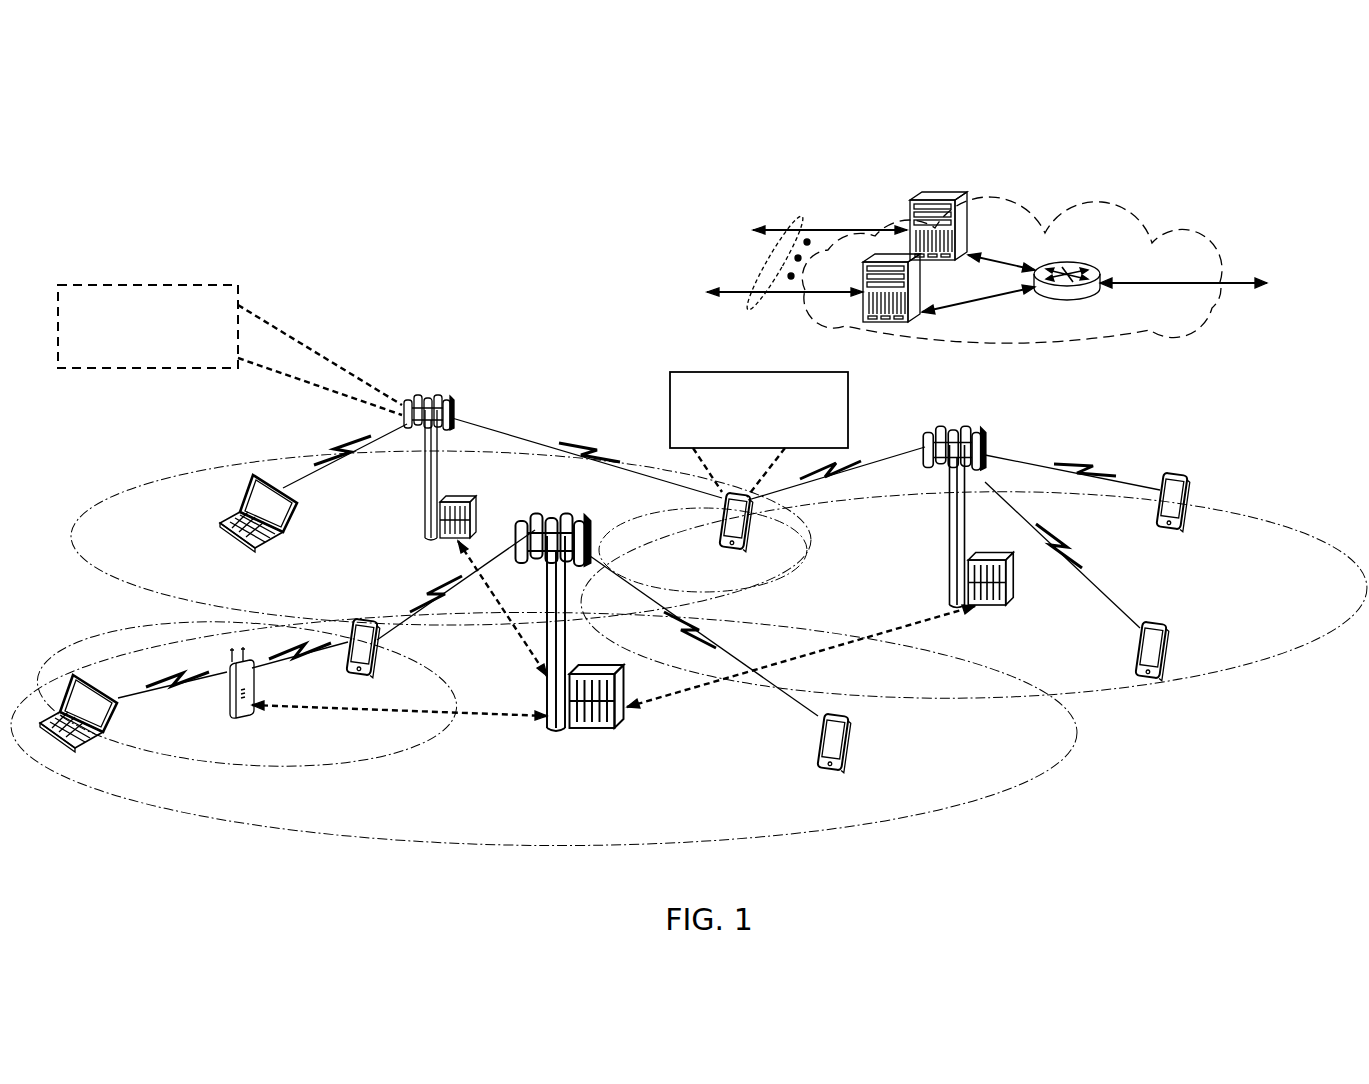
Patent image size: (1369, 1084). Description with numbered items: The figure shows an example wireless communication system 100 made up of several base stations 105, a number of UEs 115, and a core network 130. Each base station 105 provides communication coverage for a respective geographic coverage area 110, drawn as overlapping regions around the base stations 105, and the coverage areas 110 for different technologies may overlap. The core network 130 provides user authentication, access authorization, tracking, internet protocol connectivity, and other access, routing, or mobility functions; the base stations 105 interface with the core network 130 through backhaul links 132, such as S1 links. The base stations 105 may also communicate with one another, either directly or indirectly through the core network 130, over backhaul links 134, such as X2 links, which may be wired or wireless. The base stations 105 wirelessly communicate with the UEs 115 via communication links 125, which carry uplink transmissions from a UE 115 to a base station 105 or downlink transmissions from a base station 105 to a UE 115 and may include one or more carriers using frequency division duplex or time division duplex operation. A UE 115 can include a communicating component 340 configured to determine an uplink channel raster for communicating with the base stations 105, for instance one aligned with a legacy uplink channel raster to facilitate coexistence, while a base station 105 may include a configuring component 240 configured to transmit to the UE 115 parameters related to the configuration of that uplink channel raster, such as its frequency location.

The wireless communication system 100 is at (1283, 103).
The base station 105 is at (426, 508).
The geographic coverage area 110 is at (127, 594).
The UE 115 is at (270, 545).
The communication link 125 is at (345, 456).
The core network 130 is at (1100, 332).
The backhaul link 132 is at (758, 302).
The backhaul link 134 is at (300, 710).
The configuring component 240 is at (136, 288).
The communicating component 340 is at (686, 374).